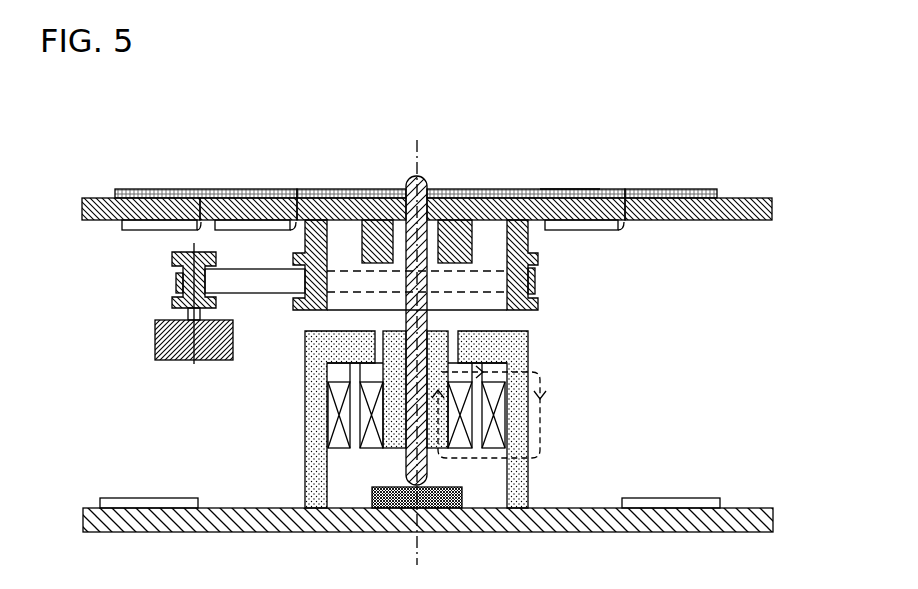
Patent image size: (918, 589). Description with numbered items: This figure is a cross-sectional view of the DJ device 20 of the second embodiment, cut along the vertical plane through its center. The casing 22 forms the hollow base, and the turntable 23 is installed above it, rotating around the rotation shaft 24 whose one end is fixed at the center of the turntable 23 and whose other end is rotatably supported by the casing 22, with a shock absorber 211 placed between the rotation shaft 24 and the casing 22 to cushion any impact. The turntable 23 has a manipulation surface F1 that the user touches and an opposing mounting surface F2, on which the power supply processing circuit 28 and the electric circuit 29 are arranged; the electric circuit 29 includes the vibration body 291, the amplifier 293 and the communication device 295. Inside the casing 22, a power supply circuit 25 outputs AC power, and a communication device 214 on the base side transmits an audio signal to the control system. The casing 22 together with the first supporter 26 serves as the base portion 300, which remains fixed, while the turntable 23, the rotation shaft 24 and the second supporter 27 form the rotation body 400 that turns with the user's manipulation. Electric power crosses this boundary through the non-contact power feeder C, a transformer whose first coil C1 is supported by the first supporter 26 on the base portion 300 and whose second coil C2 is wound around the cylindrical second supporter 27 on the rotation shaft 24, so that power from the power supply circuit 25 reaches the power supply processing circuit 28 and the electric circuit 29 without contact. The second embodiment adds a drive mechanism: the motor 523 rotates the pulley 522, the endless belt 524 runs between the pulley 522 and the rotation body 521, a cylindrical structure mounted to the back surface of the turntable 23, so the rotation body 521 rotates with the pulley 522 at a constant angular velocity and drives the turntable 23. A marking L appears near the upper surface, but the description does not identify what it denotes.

The DJ device 20 is at (752, 138).
The casing 22 is at (83, 513).
The turntable 23 is at (82, 210).
The rotation shaft 24 is at (430, 186).
The power supply circuit 25 is at (704, 498).
The first supporter 26 is at (528, 477).
The second supporter 27 is at (442, 331).
The power supply processing circuit 28 is at (202, 189).
The electric circuit 29 is at (614, 249).
The shock absorber 211 is at (372, 497).
The communication device 214 is at (148, 498).
The vibration body 291 is at (473, 246).
The amplifier 293 is at (298, 189).
The communication device 295 is at (625, 197).
The base portion 300 is at (266, 492).
The rotation body 400 is at (370, 158).
The rotation body 521 is at (538, 301).
The pulley 522 is at (176, 281).
The motor 523 is at (154, 326).
The endless belt 524 is at (272, 293).
The non-contact power feeder C is at (360, 407).
The first coil C1 is at (328, 410).
The second coil C2 is at (360, 437).
The manipulation surface F1 is at (97, 198).
The mounting surface F2 is at (95, 220).
The light L is at (568, 189).